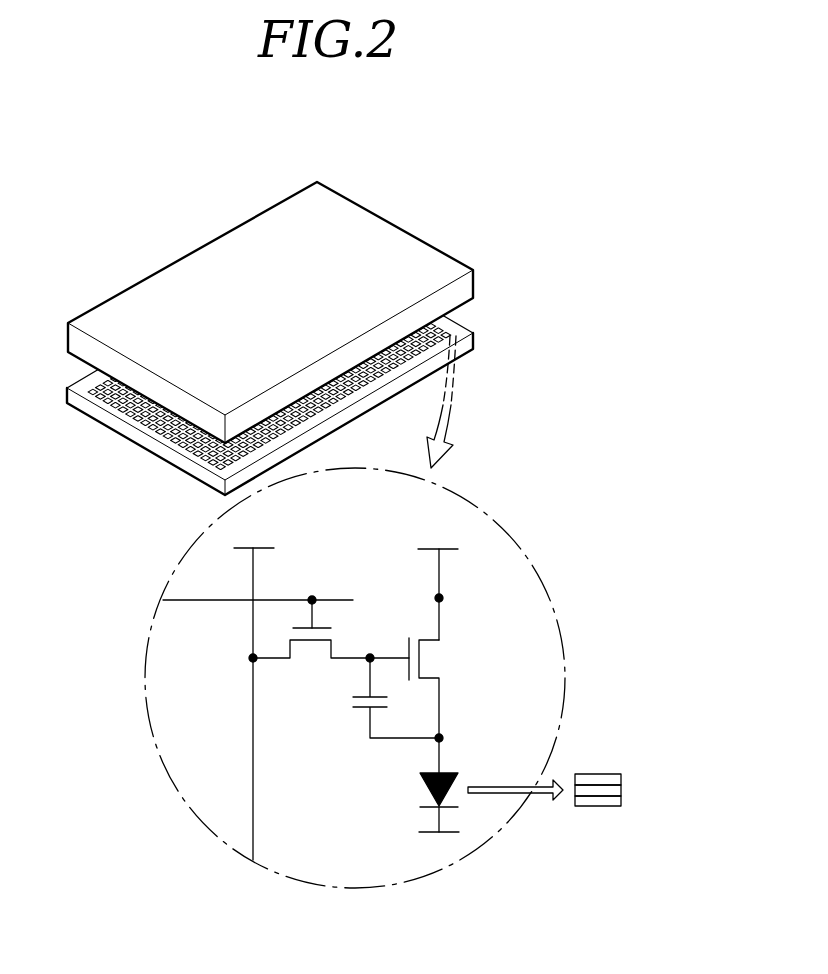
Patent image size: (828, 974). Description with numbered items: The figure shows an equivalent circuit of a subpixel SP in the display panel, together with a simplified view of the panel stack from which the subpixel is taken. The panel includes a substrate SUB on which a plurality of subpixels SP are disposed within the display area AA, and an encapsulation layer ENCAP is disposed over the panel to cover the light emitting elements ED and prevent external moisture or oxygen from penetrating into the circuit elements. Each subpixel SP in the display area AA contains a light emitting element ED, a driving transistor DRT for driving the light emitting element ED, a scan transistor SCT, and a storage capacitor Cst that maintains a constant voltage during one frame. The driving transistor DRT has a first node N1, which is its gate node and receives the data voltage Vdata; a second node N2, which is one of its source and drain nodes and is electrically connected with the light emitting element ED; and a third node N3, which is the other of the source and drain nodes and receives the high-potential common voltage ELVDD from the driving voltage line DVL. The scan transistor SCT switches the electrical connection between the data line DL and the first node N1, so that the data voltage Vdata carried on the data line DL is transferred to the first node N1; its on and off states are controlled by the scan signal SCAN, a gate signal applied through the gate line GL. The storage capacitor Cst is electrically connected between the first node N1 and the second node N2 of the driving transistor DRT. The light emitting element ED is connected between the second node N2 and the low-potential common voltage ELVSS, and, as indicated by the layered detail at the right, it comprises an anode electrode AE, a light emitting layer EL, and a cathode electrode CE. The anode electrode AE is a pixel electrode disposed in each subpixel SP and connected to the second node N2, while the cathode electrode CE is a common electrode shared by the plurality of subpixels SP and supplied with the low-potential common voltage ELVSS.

The display area AA is at (100, 193).
The encapsulation layer ENCAP is at (473, 284).
The subpixel SP is at (450, 333).
The substrate SUB is at (473, 343).
The data voltage Vdata is at (256, 537).
The data line DL is at (239, 704).
The gate line GL is at (258, 614).
The scan signal SCAN is at (312, 600).
The scan transistor SCT is at (309, 658).
The first node N1 is at (385, 646).
The high-potential common voltage ELVDD is at (438, 537).
The driving voltage line DVL is at (418, 594).
The third node N3 is at (455, 601).
The driving transistor DRT is at (442, 688).
The storage capacitor Cst is at (396, 698).
The second node N2 is at (456, 741).
The light emitting element ED is at (425, 785).
The low-potential common voltage ELVSS is at (435, 845).
The anode electrode AE is at (621, 780).
The light emitting layer EL is at (621, 790).
The cathode electrode CE is at (621, 800).